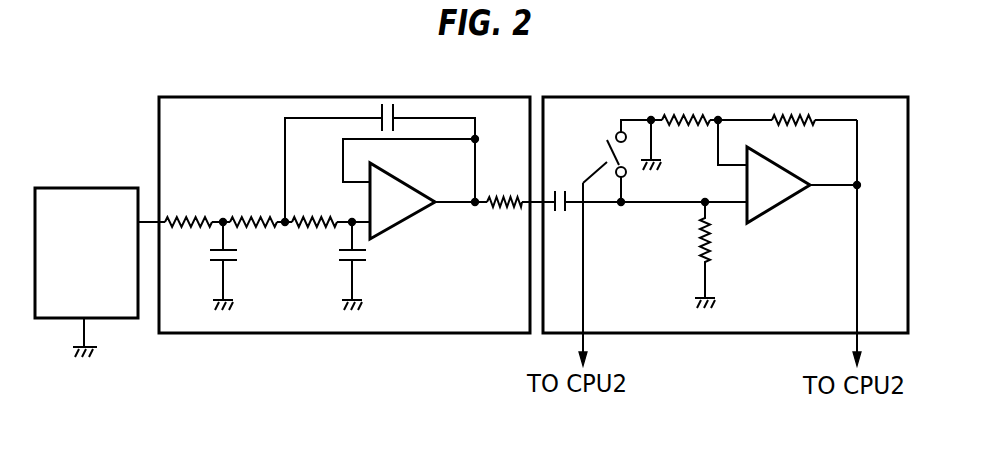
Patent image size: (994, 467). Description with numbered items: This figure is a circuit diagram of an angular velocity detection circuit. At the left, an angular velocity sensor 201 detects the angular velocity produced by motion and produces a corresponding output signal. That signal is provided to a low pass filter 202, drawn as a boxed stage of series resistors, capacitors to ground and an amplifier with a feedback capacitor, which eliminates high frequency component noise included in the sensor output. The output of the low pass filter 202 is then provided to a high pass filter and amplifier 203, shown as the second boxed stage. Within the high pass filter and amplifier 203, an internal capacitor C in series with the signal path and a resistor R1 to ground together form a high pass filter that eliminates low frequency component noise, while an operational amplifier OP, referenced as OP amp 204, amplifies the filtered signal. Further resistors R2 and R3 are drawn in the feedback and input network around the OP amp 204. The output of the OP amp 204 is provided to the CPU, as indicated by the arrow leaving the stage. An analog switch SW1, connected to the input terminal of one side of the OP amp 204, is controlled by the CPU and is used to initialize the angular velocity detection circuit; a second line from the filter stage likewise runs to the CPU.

The angular velocity sensor 201 is at (63, 187).
The low pass filter 202 is at (425, 322).
The high pass filter and amplifier 203 is at (725, 208).
The operational amplifier 204 is at (771, 174).
The OP amp OP is at (791, 189).
The resistor R1 is at (700, 250).
The resistor R2 is at (689, 118).
The resistor R3 is at (795, 118).
The analog switch SW1 is at (603, 156).
The internal capacitor C is at (560, 214).